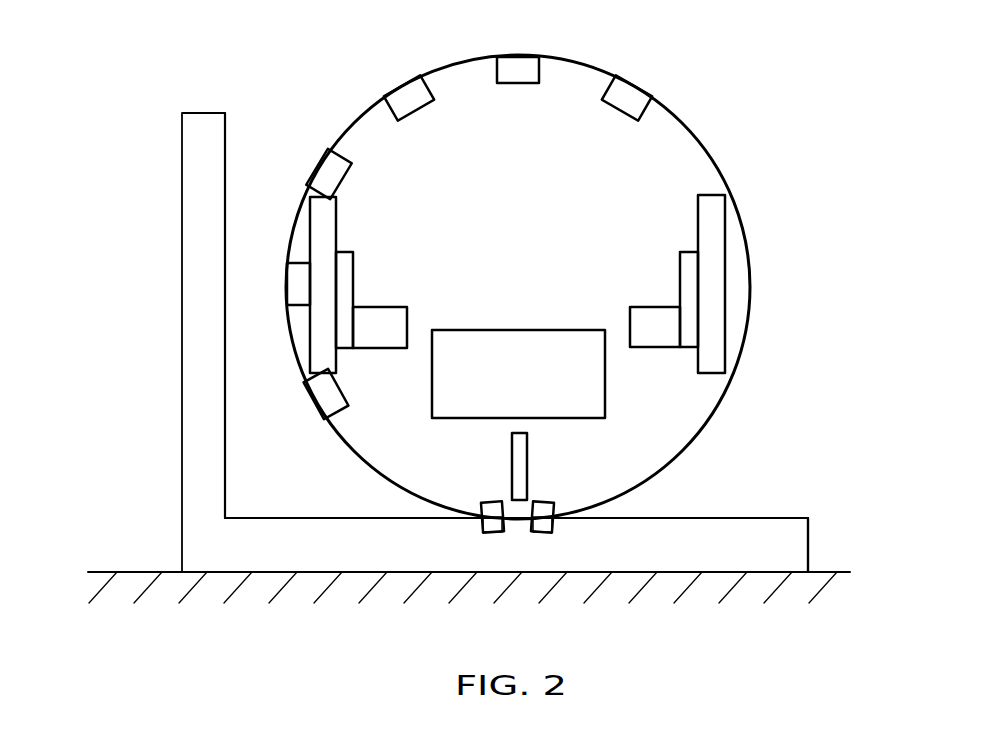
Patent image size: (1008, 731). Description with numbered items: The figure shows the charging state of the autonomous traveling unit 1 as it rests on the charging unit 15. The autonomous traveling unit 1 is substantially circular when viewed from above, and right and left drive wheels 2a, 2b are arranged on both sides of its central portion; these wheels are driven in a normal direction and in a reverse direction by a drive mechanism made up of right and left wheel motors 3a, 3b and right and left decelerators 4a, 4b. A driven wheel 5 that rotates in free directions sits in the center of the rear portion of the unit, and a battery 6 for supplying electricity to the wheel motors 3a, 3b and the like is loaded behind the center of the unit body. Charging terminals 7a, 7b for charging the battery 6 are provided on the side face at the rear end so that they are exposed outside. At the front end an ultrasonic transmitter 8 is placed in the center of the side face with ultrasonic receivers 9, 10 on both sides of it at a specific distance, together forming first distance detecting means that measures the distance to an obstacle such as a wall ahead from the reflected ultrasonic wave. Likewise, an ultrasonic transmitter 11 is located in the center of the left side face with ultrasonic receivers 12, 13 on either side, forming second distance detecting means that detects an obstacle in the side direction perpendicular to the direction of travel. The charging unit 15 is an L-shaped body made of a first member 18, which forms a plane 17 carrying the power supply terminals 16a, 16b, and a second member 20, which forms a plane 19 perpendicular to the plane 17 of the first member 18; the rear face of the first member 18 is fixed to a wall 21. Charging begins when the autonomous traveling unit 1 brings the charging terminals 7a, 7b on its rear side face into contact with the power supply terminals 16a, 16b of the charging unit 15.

The autonomous traveling unit 1 is at (688, 122).
The right drive wheel 2a is at (327, 218).
The left drive wheel 2b is at (717, 210).
The right wheel motor 3a is at (387, 320).
The left wheel motor 3b is at (645, 315).
The right decelerator 4a is at (347, 280).
The left decelerator 4b is at (688, 260).
The driven wheel 5 is at (518, 452).
The battery 6 is at (522, 340).
The charging terminal 7a is at (484, 503).
The charging terminal 7b is at (550, 500).
The ultrasonic transmitter 8 is at (518, 66).
The ultrasonic receiver 9 is at (410, 95).
The ultrasonic receiver 10 is at (630, 95).
The ultrasonic transmitter 11 is at (297, 290).
The ultrasonic receiver 12 is at (327, 390).
The ultrasonic receiver 13 is at (325, 168).
The charging unit 15 is at (757, 490).
The power supply terminal 16a is at (490, 530).
The power supply terminal 16b is at (544, 530).
The plane 17 is at (695, 518).
The first member 18 is at (798, 525).
The plane 19 is at (227, 180).
The second member 20 is at (195, 212).
The wall 21 is at (823, 568).